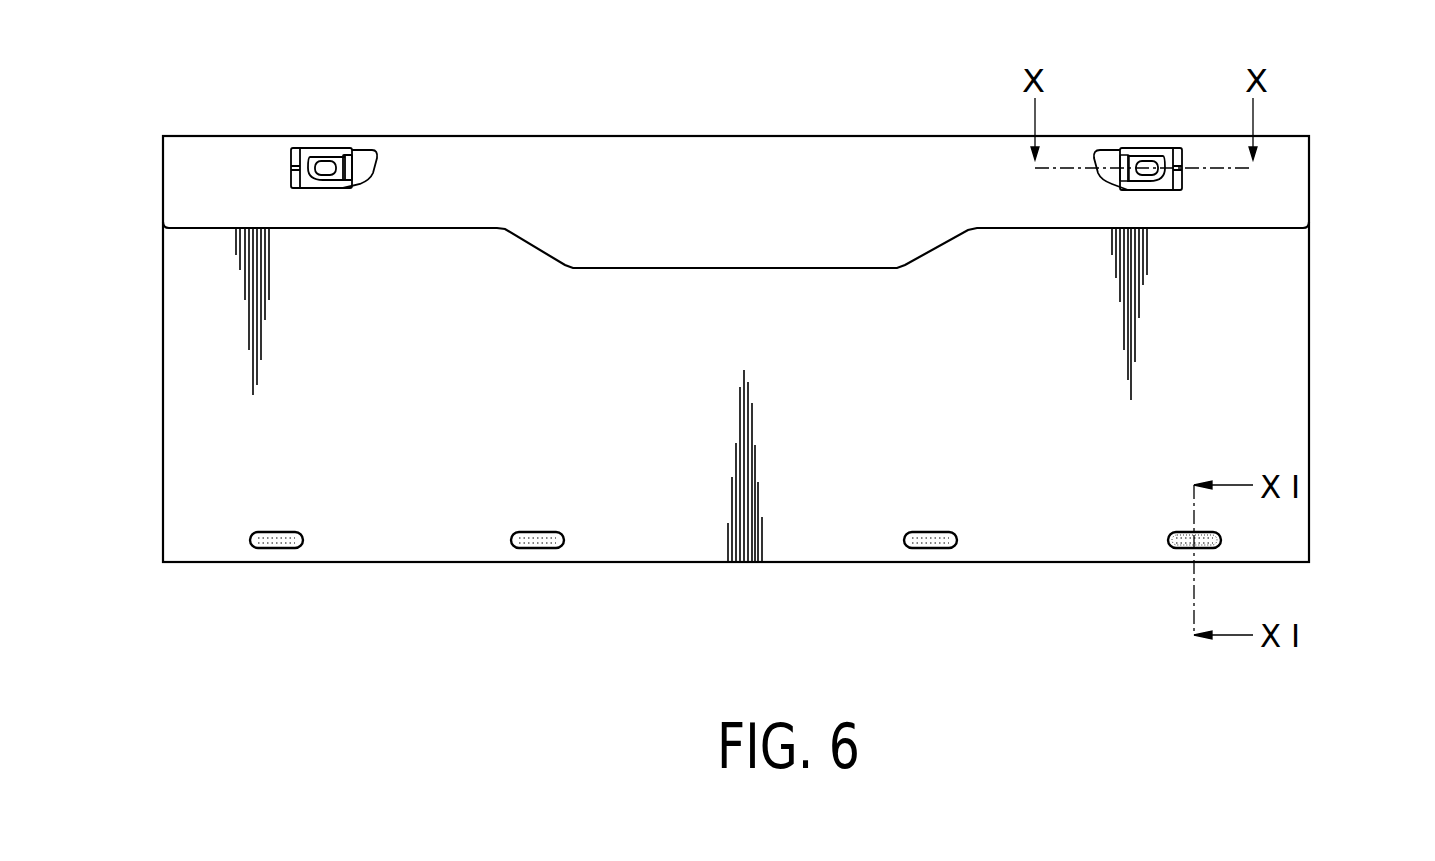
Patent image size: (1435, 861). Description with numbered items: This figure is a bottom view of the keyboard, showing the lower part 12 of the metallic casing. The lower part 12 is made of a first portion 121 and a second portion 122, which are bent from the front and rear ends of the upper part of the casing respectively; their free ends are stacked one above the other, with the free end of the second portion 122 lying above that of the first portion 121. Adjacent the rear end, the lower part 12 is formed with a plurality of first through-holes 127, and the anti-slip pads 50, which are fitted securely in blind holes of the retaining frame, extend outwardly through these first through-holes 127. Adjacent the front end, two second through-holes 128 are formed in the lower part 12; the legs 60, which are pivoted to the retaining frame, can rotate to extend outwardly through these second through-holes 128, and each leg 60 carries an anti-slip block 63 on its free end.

The lower part 12 is at (1310, 291).
The first portion 121 is at (1292, 183).
The second portion 122 is at (1288, 357).
The first through-holes 127 is at (1221, 541).
The anti-slip pads 50 is at (1177, 547).
The legs 60 is at (1155, 160).
The anti-slip block 63 is at (1133, 160).
The second through-holes 128 is at (1180, 150).